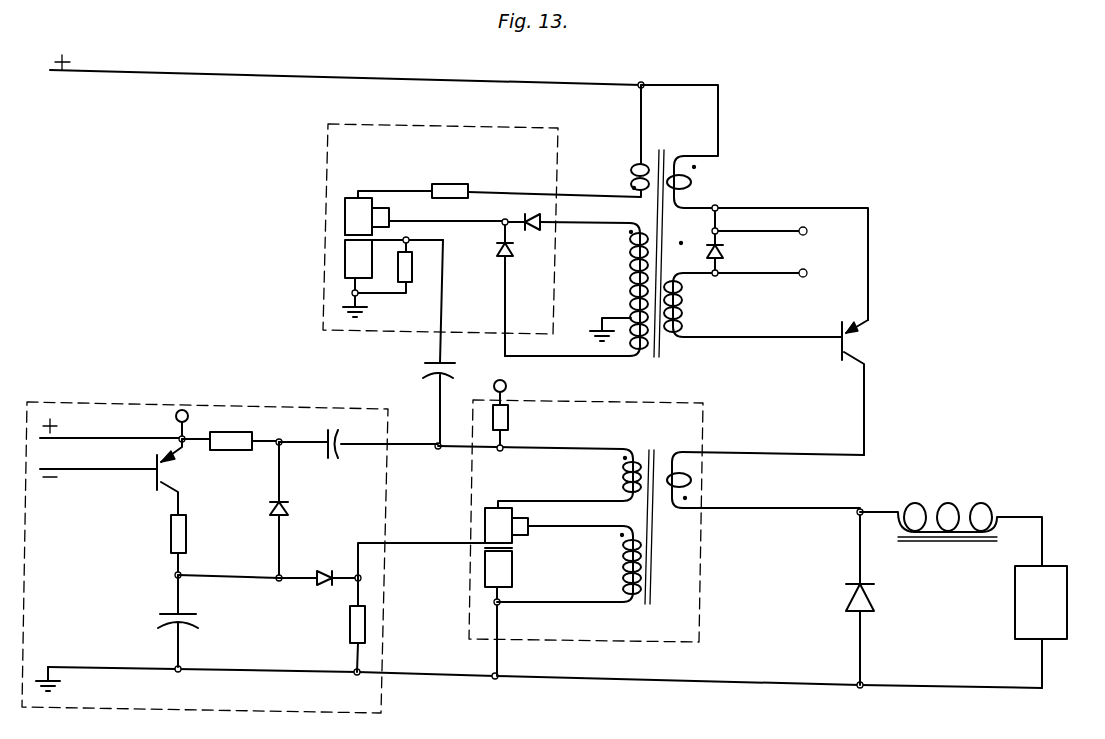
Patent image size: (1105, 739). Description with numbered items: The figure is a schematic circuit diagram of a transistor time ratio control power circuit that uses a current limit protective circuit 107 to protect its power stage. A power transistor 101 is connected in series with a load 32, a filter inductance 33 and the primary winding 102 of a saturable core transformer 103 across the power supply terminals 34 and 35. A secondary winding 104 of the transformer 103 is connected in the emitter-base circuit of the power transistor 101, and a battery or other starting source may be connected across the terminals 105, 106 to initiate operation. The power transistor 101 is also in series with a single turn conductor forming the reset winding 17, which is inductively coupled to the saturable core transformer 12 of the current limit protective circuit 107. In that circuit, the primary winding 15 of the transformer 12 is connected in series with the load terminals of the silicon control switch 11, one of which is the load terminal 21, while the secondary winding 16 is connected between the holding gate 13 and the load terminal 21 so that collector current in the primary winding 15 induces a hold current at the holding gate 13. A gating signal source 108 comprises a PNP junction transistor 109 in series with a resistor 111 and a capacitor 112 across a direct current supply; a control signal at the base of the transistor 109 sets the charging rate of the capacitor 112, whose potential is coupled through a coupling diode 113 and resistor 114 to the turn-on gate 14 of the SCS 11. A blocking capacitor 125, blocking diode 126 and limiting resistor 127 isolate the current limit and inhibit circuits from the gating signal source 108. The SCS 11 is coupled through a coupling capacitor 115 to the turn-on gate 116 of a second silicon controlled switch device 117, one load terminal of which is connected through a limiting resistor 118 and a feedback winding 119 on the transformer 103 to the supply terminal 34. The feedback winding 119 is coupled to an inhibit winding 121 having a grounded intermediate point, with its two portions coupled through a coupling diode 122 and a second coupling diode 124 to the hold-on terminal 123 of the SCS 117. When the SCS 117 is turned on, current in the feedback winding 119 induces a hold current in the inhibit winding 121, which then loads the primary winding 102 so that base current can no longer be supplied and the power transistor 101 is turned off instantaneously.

The power supply terminal 34 is at (347, 71).
The power supply terminal 35 is at (630, 683).
The saturable core transformer 103 is at (693, 138).
The primary winding 102 is at (692, 182).
The feedback winding 119 is at (630, 181).
The inhibit winding 121 is at (630, 270).
The secondary winding 104 is at (684, 306).
The terminal 105 is at (807, 231).
The terminal 106 is at (807, 273).
The power transistor 101 is at (840, 357).
The limiting resistor 118 is at (450, 184).
The second silicon controlled switch device 117 is at (345, 216).
The turn-on gate 116 is at (345, 240).
The hold-on terminal 123 is at (384, 212).
The second coupling diode 124 is at (545, 220).
The coupling diode 122 is at (497, 255).
The coupling capacitor 115 is at (430, 362).
The gating signal source 108 is at (383, 712).
The PNP junction transistor 109 is at (155, 484).
The resistor 111 is at (170, 536).
The capacitor 112 is at (165, 612).
The limiting resistor 127 is at (233, 437).
The blocking capacitor 125 is at (340, 439).
The blocking diode 126 is at (288, 508).
The coupling diode 113 is at (325, 570).
The resistor 114 is at (350, 631).
The current limit protective circuit 107 is at (705, 578).
The silicon control switch 11 is at (485, 522).
The turn-on gate 14 is at (485, 560).
The holding gate 13 is at (528, 534).
The load terminal 21 is at (494, 592).
The saturable core transformer 12 is at (662, 439).
The primary winding 15 is at (626, 477).
The secondary winding 16 is at (624, 572).
The reset winding 17 is at (688, 474).
The filter inductance 33 is at (928, 510).
The load 32 is at (1067, 602).